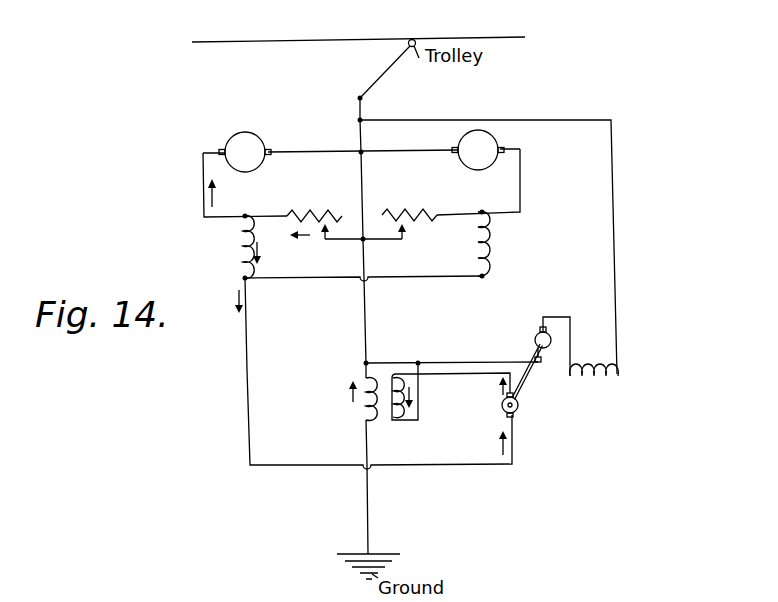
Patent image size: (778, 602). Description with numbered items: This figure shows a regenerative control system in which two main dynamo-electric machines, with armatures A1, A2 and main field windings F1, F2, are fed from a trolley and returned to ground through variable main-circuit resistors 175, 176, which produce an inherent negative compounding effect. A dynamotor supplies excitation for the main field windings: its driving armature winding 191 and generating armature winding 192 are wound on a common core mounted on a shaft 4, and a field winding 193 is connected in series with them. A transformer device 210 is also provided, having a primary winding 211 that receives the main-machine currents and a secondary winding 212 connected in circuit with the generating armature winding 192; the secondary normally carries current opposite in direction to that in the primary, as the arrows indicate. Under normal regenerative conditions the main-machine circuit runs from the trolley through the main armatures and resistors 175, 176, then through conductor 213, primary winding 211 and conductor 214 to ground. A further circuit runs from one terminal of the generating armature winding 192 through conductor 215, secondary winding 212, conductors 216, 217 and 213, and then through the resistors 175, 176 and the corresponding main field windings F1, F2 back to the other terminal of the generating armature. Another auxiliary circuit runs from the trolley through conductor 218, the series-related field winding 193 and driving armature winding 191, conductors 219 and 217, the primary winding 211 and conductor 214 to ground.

The first motor armature A1 is at (252, 146).
The second motor armature A2 is at (462, 143).
The variable main-circuit resistor 175 is at (318, 216).
The variable main-circuit resistor 176 is at (418, 216).
The main field winding F1 is at (239, 262).
The main field winding F2 is at (493, 243).
The conductor 213 is at (361, 263).
The conductor 218 is at (614, 219).
The conductor 217 is at (409, 361).
The conductor 219 is at (494, 362).
The transformer device 210 is at (382, 393).
The secondary transformer winding 212 is at (394, 417).
The conductor 216 is at (421, 410).
The conductor 215 is at (473, 376).
The primary transformer winding 211 is at (362, 413).
The generating armature winding 192 is at (518, 409).
The driving armature winding 191 is at (536, 345).
The shaft 4 is at (529, 371).
The field winding 193 is at (598, 376).
The conductor 214 is at (367, 505).